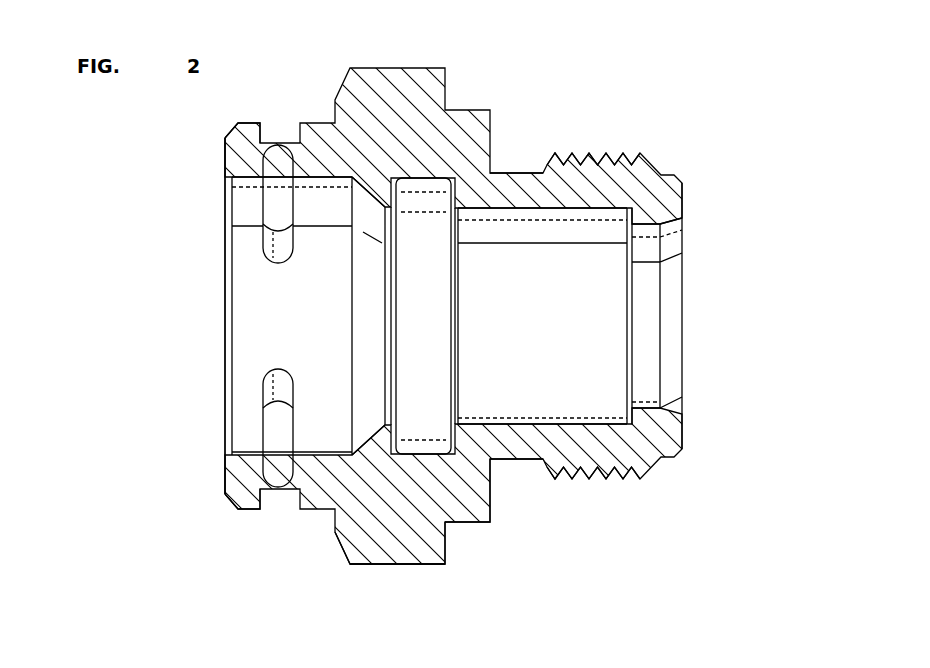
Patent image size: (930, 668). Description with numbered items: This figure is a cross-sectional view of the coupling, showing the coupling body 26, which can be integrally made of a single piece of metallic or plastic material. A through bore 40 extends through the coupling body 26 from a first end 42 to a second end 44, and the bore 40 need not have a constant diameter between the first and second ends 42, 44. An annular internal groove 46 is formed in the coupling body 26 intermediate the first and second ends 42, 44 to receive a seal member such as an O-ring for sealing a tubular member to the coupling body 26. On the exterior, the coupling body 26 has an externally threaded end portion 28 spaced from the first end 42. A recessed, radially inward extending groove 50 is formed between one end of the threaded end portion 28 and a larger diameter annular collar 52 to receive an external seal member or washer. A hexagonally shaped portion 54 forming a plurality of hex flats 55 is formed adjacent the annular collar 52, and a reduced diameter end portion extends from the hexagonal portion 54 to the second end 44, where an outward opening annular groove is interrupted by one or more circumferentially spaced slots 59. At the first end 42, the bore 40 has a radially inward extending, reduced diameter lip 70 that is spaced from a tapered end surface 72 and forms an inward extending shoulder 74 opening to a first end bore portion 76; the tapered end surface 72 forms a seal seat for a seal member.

The coupling body 26 is at (336, 69).
The externally threaded end portion 28 is at (605, 158).
The through bore 40 is at (292, 316).
The first end 42 is at (685, 198).
The second end 44 is at (227, 480).
The annular internal groove 46 is at (425, 452).
The recessed radially inward extending groove 50 is at (543, 166).
The annular collar 52 is at (470, 524).
The hexagonally shaped portion 54 is at (372, 568).
The hex flats 55 is at (404, 567).
The circumferentially spaced slots 59 is at (262, 207).
The lip 70 is at (641, 406).
The tapered end surface 72 is at (668, 405).
The shoulder 74 is at (622, 420).
The first end bore portion 76 is at (508, 418).